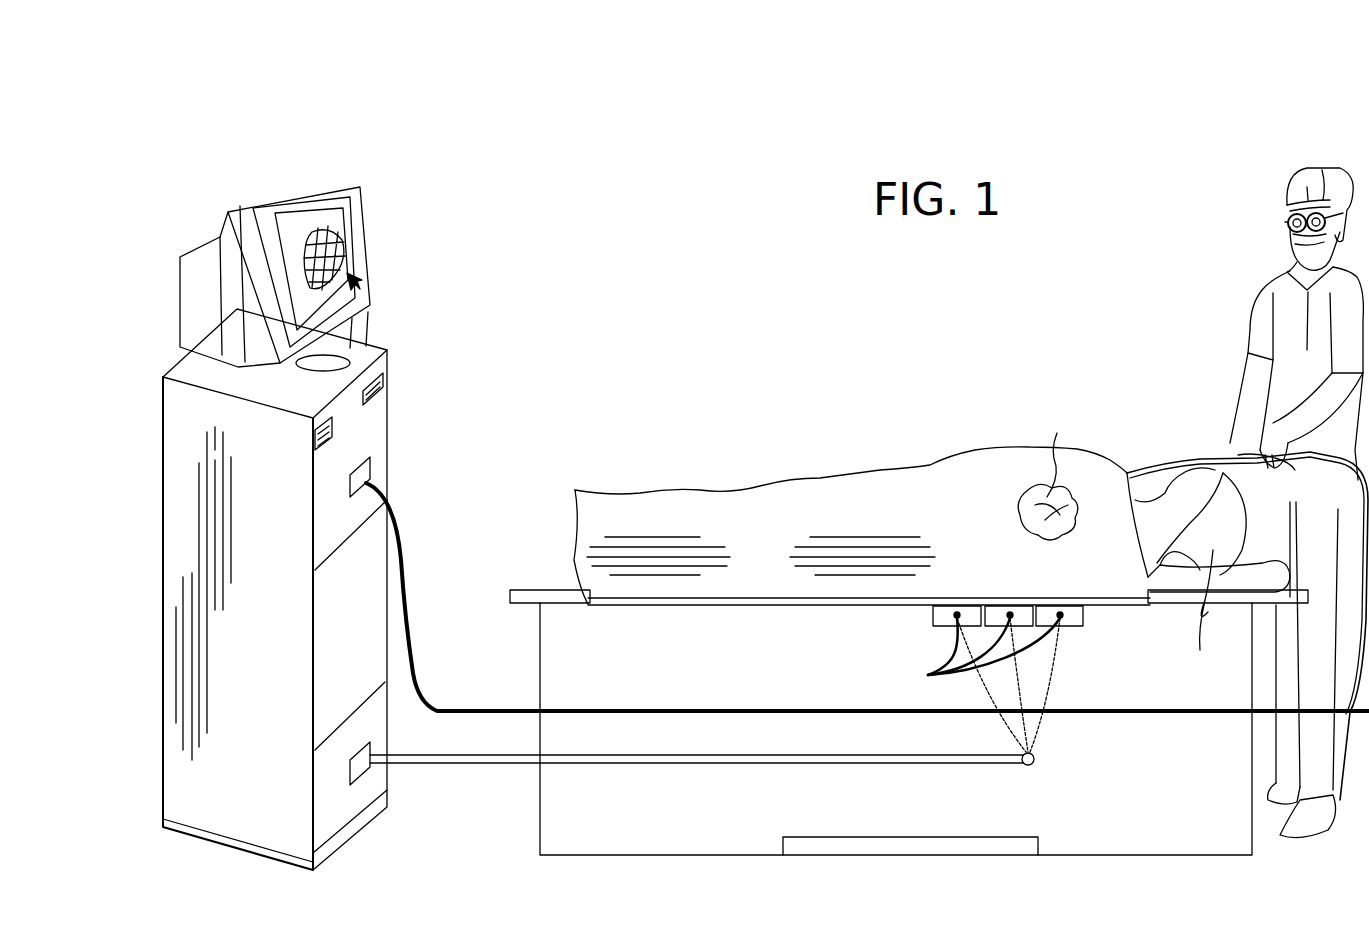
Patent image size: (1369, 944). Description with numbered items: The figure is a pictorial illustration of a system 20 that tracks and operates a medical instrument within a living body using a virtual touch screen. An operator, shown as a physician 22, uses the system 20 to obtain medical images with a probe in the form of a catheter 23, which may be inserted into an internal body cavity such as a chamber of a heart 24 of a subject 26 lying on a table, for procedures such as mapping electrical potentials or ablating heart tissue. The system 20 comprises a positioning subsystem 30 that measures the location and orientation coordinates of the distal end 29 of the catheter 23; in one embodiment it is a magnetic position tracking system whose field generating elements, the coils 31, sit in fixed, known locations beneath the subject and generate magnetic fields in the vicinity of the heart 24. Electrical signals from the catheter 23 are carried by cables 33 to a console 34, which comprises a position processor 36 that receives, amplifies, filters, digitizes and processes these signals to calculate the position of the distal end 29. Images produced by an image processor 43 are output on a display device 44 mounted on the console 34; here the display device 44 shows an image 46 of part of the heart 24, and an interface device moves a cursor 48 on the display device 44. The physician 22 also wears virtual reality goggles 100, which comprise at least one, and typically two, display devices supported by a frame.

The system 20 is at (335, 128).
The physician 22 is at (1278, 330).
The catheter 23 is at (1235, 462).
The heart 24 is at (1052, 450).
The subject 26 is at (1200, 650).
The distal end 29 is at (1027, 523).
The positioning subsystem 30 is at (1082, 752).
The coils 31 is at (975, 679).
The cables 33 is at (425, 660).
The console 34 is at (496, 158).
The position processor 36 is at (320, 778).
The image processor 43 is at (325, 483).
The display device 44 is at (302, 197).
The image 46 is at (388, 207).
The cursor 48 is at (357, 282).
The virtual reality goggles 100 is at (1285, 222).